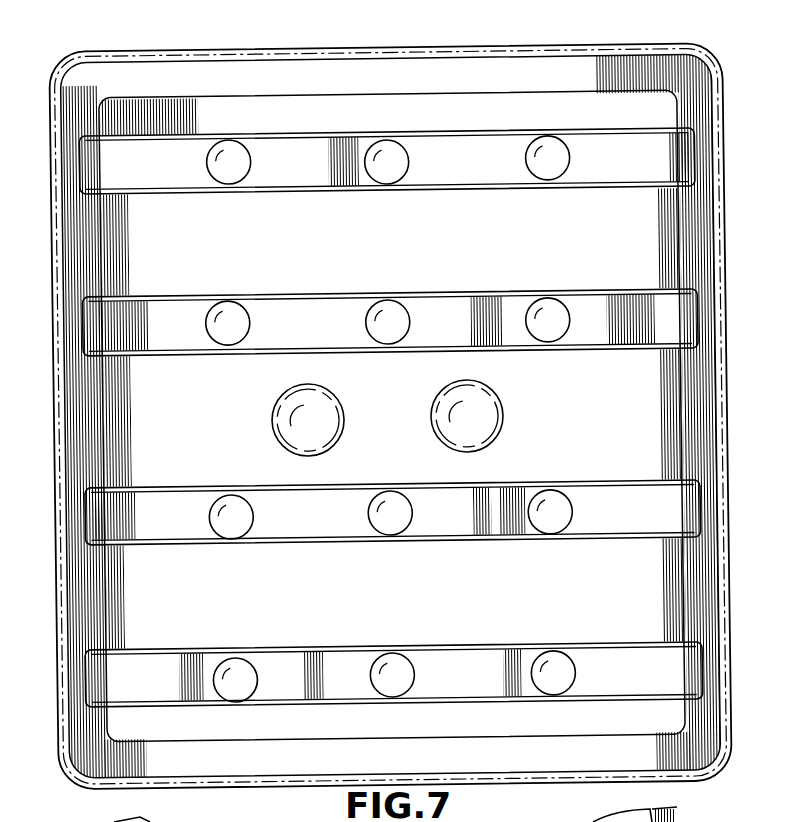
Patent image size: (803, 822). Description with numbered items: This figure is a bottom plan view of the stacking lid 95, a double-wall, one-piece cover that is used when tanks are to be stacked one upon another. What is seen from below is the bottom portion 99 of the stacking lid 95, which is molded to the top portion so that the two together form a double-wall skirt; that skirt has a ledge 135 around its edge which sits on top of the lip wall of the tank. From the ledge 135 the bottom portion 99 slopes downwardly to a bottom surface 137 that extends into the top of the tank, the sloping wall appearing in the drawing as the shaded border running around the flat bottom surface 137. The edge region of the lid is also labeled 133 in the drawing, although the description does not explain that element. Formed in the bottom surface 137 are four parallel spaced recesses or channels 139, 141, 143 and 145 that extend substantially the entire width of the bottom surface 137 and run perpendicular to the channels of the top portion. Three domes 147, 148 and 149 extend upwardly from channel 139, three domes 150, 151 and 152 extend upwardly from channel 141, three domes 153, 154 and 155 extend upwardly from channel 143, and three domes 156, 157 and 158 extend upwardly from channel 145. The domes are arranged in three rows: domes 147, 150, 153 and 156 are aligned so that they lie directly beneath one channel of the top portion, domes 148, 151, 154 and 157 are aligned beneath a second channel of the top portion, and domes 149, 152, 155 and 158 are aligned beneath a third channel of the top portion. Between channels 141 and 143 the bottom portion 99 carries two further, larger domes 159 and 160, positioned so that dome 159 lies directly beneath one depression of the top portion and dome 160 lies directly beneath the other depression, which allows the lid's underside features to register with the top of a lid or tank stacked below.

The stacking lid 95 is at (480, 46).
The bottom portion 99 is at (128, 600).
The inner flange 133 is at (54, 702).
The ledge 135 is at (151, 81).
The bottom surface 137 is at (122, 240).
The channel 139 is at (462, 663).
The channel 141 is at (327, 524).
The channel 143 is at (316, 315).
The channel 145 is at (487, 167).
The dome 147 is at (230, 663).
The dome 148 is at (369, 672).
The dome 149 is at (545, 669).
The dome 150 is at (231, 505).
The dome 151 is at (392, 500).
The dome 152 is at (536, 499).
The dome 153 is at (229, 306).
The dome 154 is at (394, 316).
The dome 155 is at (552, 309).
The dome 156 is at (232, 148).
The dome 157 is at (388, 146).
The dome 158 is at (549, 150).
The dome 159 is at (294, 403).
The dome 160 is at (457, 411).